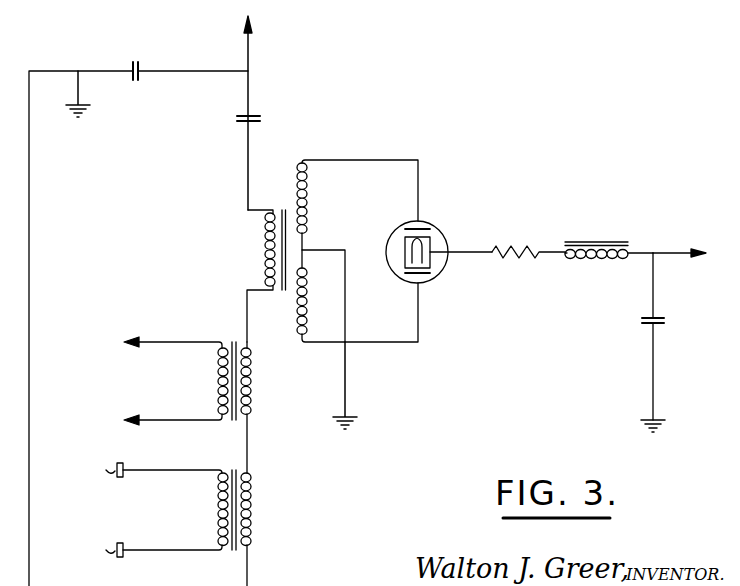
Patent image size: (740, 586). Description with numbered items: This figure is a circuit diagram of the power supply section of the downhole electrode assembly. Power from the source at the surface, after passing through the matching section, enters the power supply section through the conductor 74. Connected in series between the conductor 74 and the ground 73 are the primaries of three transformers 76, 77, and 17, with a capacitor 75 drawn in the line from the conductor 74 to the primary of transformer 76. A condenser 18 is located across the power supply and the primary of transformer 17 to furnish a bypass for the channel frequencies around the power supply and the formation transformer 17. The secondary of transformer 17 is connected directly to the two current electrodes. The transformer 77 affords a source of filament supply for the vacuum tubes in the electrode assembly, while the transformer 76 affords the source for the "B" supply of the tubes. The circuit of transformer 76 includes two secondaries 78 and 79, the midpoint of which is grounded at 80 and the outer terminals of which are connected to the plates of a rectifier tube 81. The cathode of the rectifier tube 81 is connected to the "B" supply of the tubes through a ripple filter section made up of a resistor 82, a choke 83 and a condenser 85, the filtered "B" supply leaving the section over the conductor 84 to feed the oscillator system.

The transformer 17 is at (218, 510).
The condenser 18 is at (139, 75).
The ground 73 is at (84, 112).
The conductor 74 is at (251, 47).
The coupling capacitor 75 is at (244, 122).
The transformer 76 is at (285, 208).
The transformer 77 is at (252, 392).
The secondary 78 is at (307, 211).
The secondary 79 is at (307, 300).
The ground 80 is at (350, 416).
The rectifier tube 81 is at (437, 231).
The resistor 82 is at (516, 247).
The choke 83 is at (594, 261).
The conductor 84 is at (688, 252).
The condenser 85 is at (648, 325).